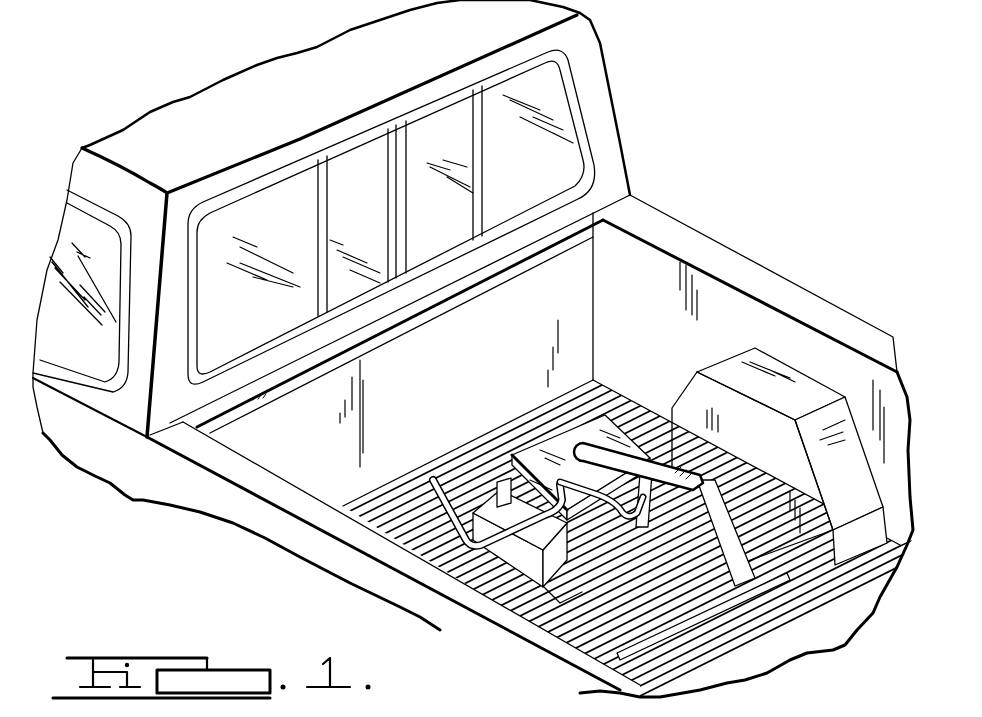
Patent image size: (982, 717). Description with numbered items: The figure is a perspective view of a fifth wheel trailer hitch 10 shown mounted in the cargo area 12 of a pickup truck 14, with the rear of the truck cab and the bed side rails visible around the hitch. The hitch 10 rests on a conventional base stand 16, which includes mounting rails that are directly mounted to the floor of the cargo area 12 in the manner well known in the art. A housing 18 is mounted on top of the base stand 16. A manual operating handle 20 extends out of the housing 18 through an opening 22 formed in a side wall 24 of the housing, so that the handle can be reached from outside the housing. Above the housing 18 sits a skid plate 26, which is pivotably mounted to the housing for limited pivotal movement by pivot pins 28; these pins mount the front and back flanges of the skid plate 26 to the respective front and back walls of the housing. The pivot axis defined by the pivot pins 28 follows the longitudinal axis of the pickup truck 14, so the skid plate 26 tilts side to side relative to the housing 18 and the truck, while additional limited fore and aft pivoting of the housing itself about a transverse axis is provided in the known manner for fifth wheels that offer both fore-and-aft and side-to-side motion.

The fifth wheel trailer hitch 10 is at (616, 510).
The cargo area 12 is at (849, 555).
The pickup truck 14 is at (687, 211).
The base stand 16 is at (731, 537).
The housing 18 is at (641, 420).
The manual operating handle 20 is at (498, 552).
The opening 22 is at (540, 590).
The side wall 24 is at (505, 478).
The skid plate 26 is at (601, 414).
The pivot pins 28 is at (645, 529).